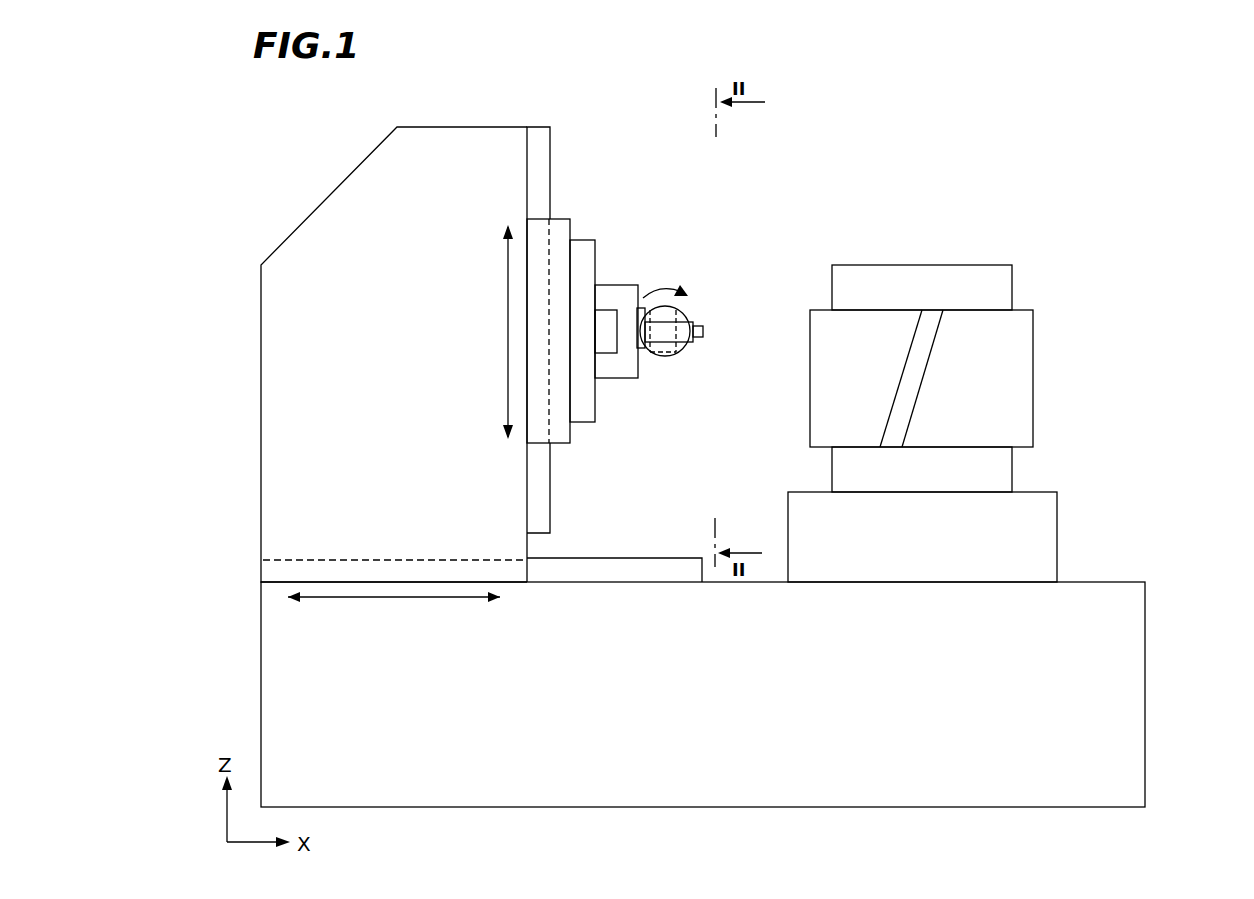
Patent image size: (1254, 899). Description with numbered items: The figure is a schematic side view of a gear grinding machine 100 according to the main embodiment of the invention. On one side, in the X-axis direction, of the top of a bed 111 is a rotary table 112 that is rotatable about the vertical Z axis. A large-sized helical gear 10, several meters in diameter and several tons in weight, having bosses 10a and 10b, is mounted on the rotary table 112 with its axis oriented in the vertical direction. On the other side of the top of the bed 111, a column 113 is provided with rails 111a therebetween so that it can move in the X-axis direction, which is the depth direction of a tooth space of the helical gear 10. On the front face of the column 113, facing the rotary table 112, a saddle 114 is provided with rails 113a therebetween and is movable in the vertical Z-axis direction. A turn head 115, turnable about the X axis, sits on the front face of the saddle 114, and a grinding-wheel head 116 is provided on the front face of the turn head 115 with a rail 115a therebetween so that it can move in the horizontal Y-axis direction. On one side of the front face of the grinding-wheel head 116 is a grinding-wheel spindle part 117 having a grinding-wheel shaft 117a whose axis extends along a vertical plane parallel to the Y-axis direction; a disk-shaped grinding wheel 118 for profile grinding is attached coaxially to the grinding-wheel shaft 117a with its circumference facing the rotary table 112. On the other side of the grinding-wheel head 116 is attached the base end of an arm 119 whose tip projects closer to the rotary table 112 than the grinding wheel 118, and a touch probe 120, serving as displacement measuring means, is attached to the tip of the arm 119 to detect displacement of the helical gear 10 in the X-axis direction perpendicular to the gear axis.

The machine tool 100 is at (917, 163).
The helical gear 10 is at (1033, 380).
The boss 10a is at (1012, 287).
The boss 10b is at (1007, 470).
The bed 111 is at (1137, 692).
The rails 111a is at (663, 558).
The rotary table 112 is at (1043, 537).
The column 113 is at (457, 136).
The rails 113a is at (538, 134).
The saddle 114 is at (570, 443).
The turn head 115 is at (595, 422).
The rail 115a is at (605, 310).
The grinding-wheel head 116 is at (633, 283).
The grinding-wheel spindle part 117 is at (647, 357).
The grinding-wheel shaft 117a is at (668, 342).
The grinding wheel 118 is at (687, 352).
The arm 119 is at (687, 307).
The touch probe 120 is at (705, 331).